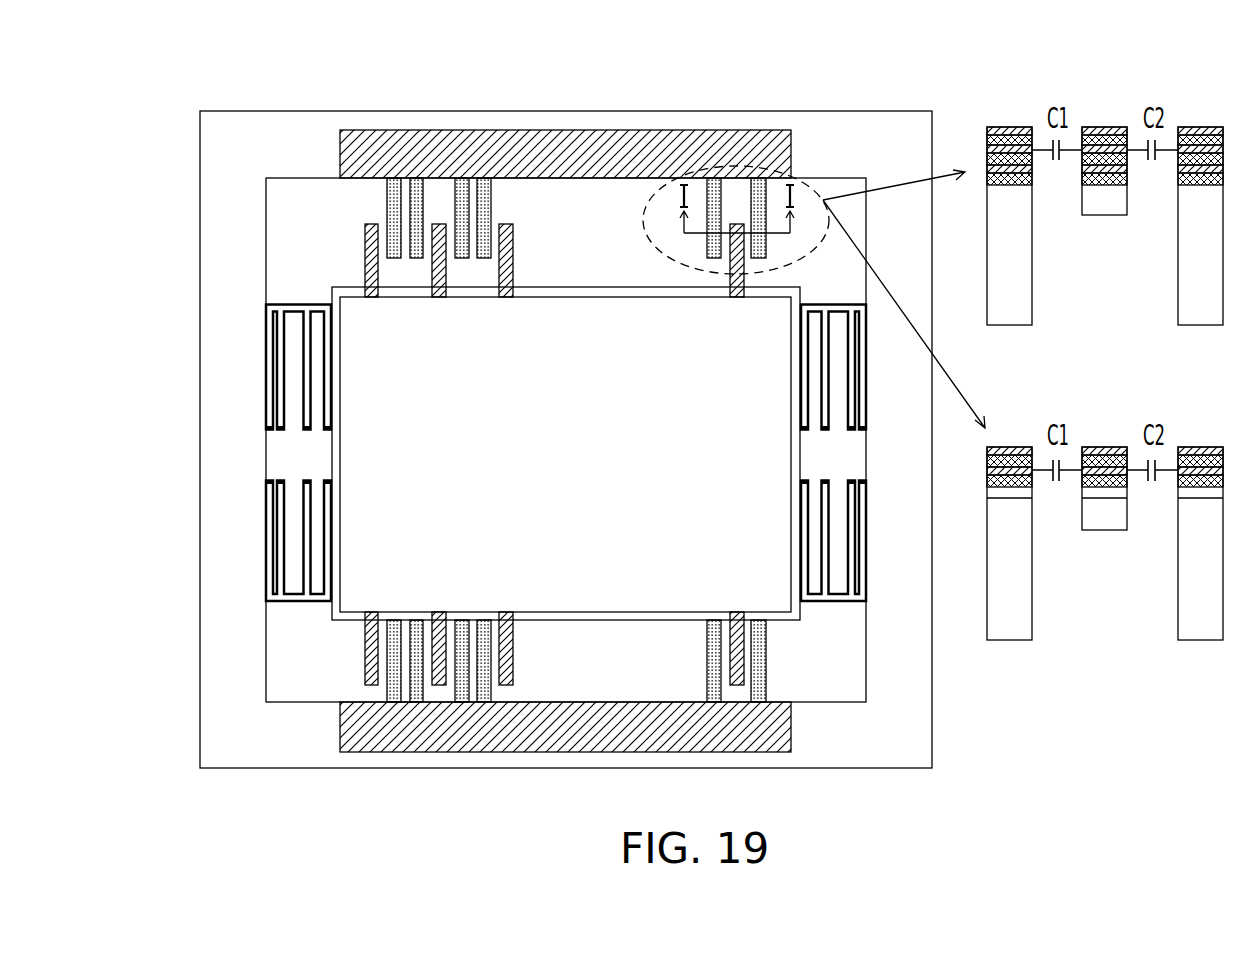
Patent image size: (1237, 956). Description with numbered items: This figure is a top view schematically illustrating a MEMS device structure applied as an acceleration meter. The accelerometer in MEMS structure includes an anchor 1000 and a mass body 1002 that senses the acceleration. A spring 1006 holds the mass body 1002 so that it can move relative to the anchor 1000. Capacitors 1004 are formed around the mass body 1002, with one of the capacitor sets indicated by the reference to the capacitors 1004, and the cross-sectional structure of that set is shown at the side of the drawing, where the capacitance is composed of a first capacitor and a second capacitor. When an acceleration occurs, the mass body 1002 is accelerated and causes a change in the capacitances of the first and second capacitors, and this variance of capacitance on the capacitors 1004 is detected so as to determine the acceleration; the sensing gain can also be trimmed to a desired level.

The anchor 1000 is at (264, 155).
The mass body 1002 is at (773, 578).
The capacitors 1004 is at (815, 192).
The spring 1006 is at (855, 547).